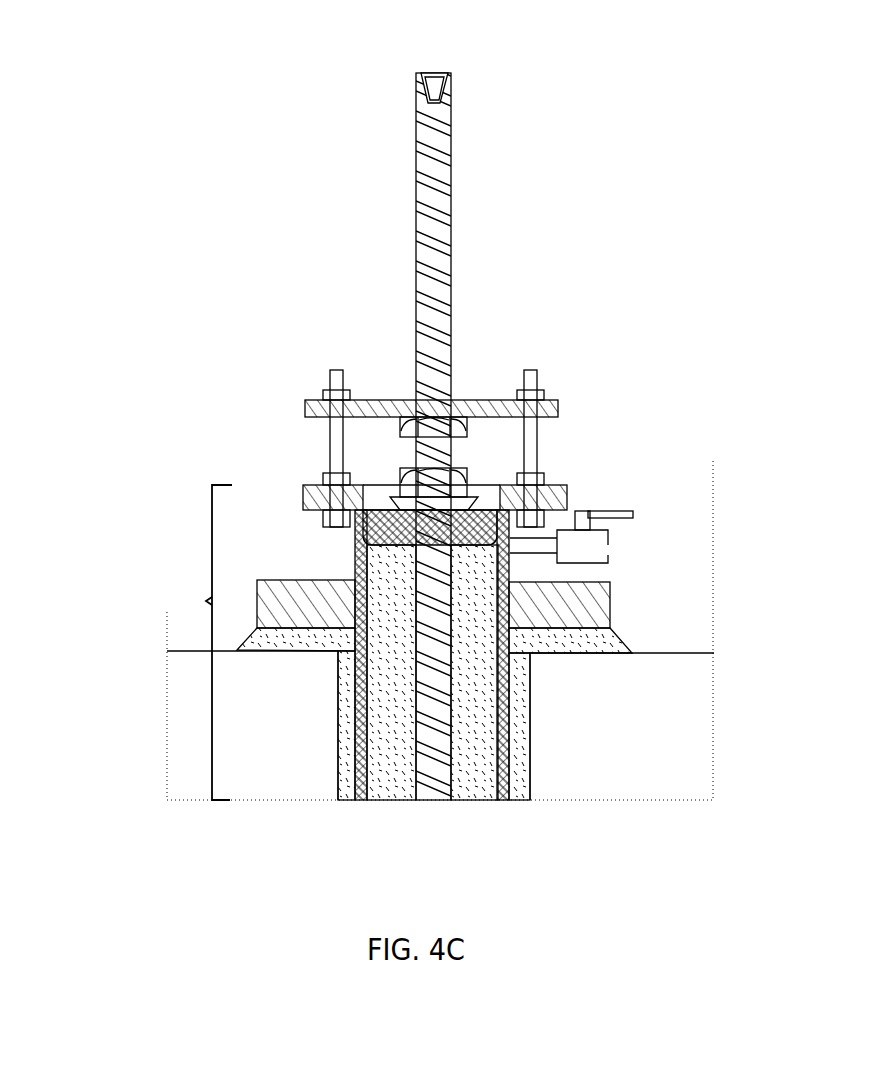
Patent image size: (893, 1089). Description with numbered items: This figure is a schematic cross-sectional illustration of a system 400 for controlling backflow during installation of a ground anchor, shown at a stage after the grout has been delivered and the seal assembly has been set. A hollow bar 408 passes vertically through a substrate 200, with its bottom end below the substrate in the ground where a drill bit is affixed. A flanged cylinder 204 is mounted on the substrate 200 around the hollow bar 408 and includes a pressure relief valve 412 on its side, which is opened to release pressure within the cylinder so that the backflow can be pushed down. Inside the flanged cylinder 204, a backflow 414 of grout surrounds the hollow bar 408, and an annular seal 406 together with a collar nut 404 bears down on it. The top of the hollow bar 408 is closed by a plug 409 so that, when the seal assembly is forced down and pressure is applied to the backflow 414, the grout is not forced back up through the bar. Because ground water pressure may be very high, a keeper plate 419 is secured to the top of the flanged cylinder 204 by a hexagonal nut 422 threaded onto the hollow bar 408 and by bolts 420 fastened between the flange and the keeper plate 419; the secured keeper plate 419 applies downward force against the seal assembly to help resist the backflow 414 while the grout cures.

The system 400 is at (207, 98).
The hollow bar 408 is at (420, 100).
The plug 409 is at (446, 78).
The keeper plate 419 is at (305, 405).
The bolts 420 is at (330, 425).
The hexagonal nut 422 is at (472, 410).
The collar nut 404 is at (398, 480).
The annular seal 406 is at (362, 533).
The pressure relief valve 412 is at (598, 540).
The backflow 414 is at (455, 710).
The flanged cylinder 204 is at (206, 601).
The substrate 200 is at (296, 720).